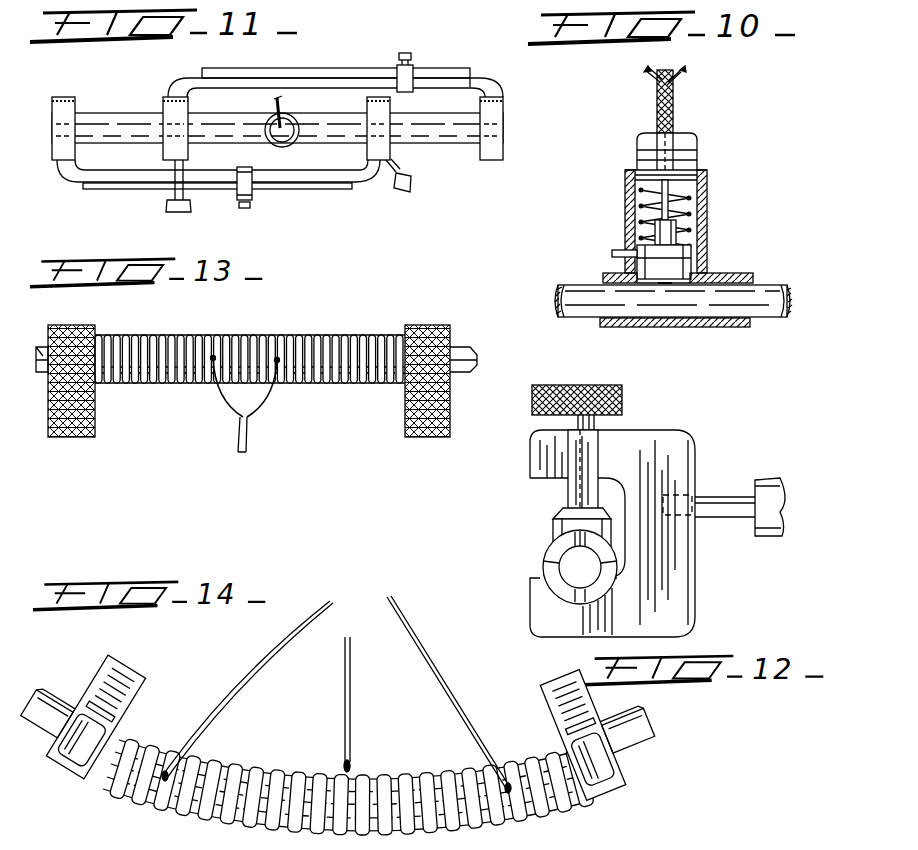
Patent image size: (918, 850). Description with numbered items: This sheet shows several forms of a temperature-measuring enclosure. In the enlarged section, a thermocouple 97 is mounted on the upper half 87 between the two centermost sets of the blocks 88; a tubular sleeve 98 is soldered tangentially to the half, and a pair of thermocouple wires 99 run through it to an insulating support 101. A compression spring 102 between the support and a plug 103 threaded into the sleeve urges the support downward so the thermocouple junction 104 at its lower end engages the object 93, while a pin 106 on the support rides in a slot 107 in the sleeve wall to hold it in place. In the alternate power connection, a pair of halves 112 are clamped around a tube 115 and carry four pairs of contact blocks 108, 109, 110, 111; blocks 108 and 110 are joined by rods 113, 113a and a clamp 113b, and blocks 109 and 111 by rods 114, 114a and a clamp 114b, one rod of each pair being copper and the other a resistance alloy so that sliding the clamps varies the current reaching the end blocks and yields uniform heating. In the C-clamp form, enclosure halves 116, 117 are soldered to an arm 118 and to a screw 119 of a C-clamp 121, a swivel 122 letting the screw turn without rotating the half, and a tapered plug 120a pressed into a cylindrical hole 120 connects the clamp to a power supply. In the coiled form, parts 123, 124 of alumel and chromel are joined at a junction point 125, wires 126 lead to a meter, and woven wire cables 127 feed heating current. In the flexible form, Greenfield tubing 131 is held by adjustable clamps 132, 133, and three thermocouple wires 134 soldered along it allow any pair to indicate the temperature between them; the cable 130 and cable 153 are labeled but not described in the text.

In FIG. 10, the upper half 87 is at (735, 274).
In FIG. 10, the blocks 88 is at (735, 328).
In FIG. 10, the object 93 is at (568, 295).
In FIG. 10, the thermocouple 97 is at (716, 167).
In FIG. 10, the tubular sleeve 98 is at (627, 192).
In FIG. 10, the thermocouple wires 99 is at (645, 82).
In FIG. 10, the insulating support 101 is at (687, 253).
In FIG. 10, the compression spring 102 is at (687, 213).
In FIG. 10, the plug 103 is at (643, 137).
In FIG. 10, the thermocouple junction 104 is at (666, 284).
In FIG. 10, the pin 106 is at (613, 248).
In FIG. 10, the slot 107 is at (655, 259).
In FIG. 11, the contact block 108 is at (497, 105).
In FIG. 11, the contact block 109 is at (393, 108).
In FIG. 11, the contact block 110 is at (168, 108).
In FIG. 11, the contact block 111 is at (73, 110).
In FIG. 11, the halves 112 is at (455, 122).
In FIG. 11, the rod 113 is at (328, 68).
In FIG. 11, the rod 113a is at (259, 86).
In FIG. 11, the clamp 113b is at (405, 70).
In FIG. 11, the rod 114 is at (350, 177).
In FIG. 11, the rod 114a is at (327, 180).
In FIG. 11, the clamp 114b is at (253, 200).
In FIG. 11, the tube 115 is at (132, 122).
In FIG. 12, the enclosure half 116 is at (558, 581).
In FIG. 12, the enclosure half 117 is at (555, 545).
In FIG. 12, the arm 118 is at (542, 607).
In FIG. 12, the screw 119 is at (570, 492).
In FIG. 12, the cylindrical hole 120 is at (643, 502).
In FIG. 12, the tapered plug 120a is at (718, 503).
In FIG. 12, the C-clamp 121 is at (700, 575).
In FIG. 12, the swivel 122 is at (557, 521).
In FIG. 13, the coiled part 123 is at (135, 383).
In FIG. 13, the coiled part 124 is at (368, 383).
In FIG. 13, the junction point 125 is at (250, 369).
In FIG. 13, the wires 126 is at (263, 393).
In FIG. 13, the woven wire cables 127 is at (65, 440).
In FIG. 14, the cable 130 is at (523, 847).
In FIG. 14, the tubing 131 is at (147, 743).
In FIG. 14, the adjustable clamp 132 is at (90, 684).
In FIG. 14, the adjustable clamp 133 is at (590, 714).
In FIG. 14, the thermocouple wires 134 is at (345, 657).
In FIG. 14, the cable 153 is at (667, 845).